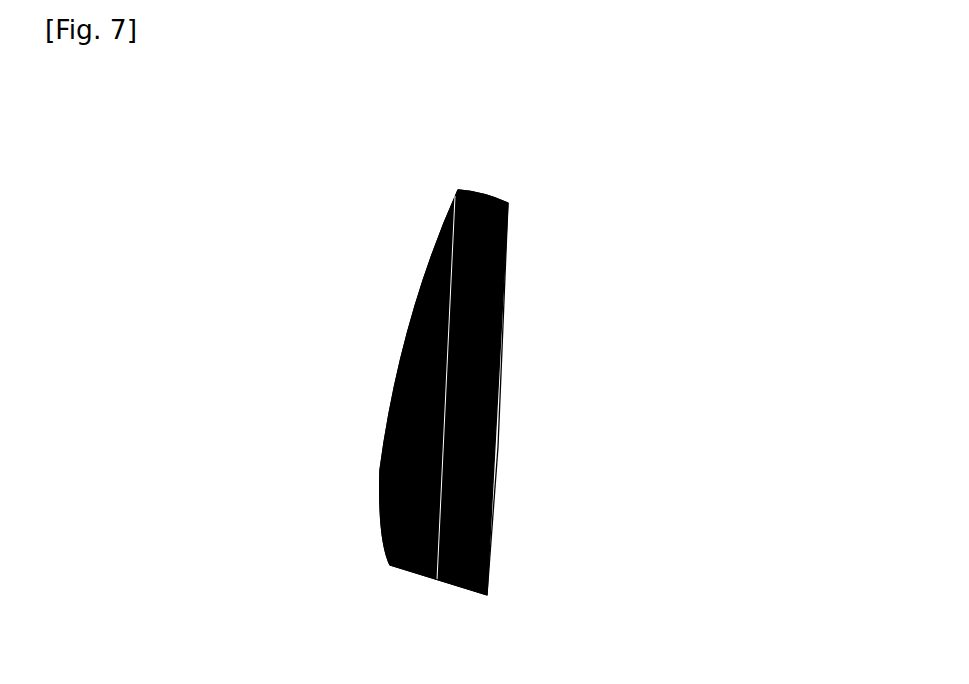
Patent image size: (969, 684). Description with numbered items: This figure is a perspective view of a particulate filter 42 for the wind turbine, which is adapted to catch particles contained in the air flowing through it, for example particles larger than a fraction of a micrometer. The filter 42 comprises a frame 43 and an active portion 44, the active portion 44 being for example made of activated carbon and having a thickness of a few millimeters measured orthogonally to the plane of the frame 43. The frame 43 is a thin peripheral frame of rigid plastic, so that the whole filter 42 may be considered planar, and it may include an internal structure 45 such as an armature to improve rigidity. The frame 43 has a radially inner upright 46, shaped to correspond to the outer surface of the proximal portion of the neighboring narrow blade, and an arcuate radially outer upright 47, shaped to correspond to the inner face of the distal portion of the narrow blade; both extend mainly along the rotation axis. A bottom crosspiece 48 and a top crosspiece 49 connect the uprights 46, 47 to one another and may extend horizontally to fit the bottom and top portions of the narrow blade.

The filter 42 is at (608, 282).
The frame 43 is at (498, 447).
The active portion 44 is at (405, 430).
The internal structure 45 is at (438, 507).
The radially inner upright 46 is at (492, 550).
The radially outer upright 47 is at (383, 530).
The bottom crosspiece 48 is at (460, 587).
The top crosspiece 49 is at (480, 190).